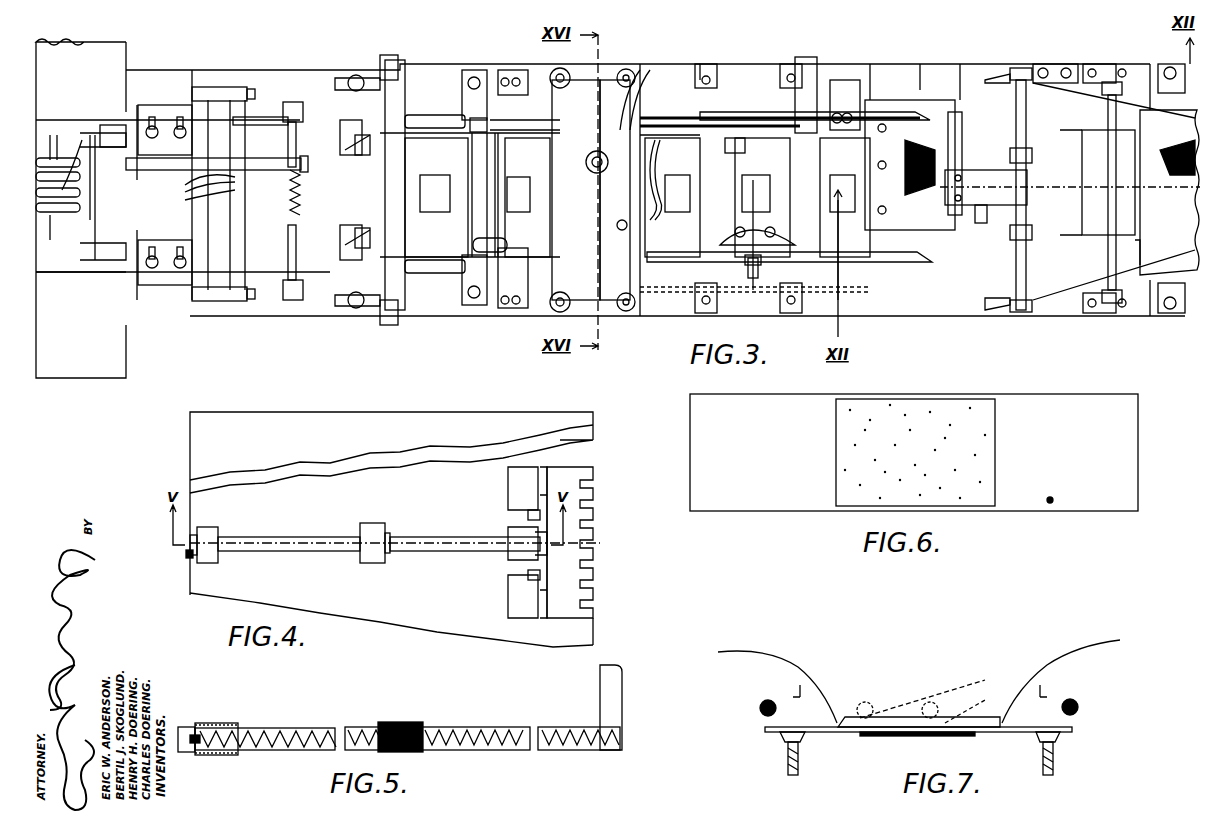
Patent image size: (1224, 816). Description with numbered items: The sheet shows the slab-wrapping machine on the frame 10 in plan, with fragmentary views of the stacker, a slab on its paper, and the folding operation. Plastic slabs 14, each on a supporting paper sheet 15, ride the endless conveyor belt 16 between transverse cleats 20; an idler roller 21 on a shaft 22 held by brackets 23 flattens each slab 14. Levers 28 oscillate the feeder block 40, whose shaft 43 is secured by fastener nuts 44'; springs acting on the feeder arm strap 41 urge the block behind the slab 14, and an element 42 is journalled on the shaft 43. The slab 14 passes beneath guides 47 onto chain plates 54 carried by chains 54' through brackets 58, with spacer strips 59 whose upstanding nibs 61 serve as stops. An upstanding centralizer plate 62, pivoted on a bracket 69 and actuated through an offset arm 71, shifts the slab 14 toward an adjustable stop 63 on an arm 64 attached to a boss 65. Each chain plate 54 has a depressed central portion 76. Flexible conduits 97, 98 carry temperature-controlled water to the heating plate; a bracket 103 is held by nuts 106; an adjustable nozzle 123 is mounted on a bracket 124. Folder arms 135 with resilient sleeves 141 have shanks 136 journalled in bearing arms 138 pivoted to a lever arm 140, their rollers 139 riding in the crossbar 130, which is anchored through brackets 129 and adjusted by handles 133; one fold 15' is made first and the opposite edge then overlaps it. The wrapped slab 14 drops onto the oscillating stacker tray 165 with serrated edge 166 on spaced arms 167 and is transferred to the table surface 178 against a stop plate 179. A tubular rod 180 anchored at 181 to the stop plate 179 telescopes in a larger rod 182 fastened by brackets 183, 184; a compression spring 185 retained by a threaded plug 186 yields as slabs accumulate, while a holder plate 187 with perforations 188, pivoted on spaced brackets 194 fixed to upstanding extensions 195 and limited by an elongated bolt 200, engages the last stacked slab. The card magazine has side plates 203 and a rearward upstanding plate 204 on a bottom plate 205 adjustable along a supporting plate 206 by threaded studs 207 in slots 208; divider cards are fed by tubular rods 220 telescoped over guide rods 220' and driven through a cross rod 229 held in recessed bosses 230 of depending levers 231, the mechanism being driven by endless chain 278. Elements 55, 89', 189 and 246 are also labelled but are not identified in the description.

In FIG. 3, the frame 10 is at (1040, 341).
In FIG. 6, the plastic slab 14 is at (935, 407).
In FIG. 7, the plastic slab 14 is at (897, 715).
In FIG. 6, the paper sheet 15 is at (934, 452).
In FIG. 7, the paper sheet 15 is at (919, 672).
In FIG. 7, the first fold 15' is at (975, 706).
In FIG. 3, the endless conveyor belt 16 is at (1170, 130).
In FIG. 3, the transverse cleats 20 is at (1062, 150).
In FIG. 3, the idler roller 21 is at (1112, 175).
In FIG. 3, the shaft 22 is at (1135, 245).
In FIG. 3, the brackets 23 is at (1122, 328).
In FIG. 3, the levers 28 is at (990, 336).
In FIG. 3, the feeder block 40 is at (960, 120).
In FIG. 3, the feeder arm strap 41 is at (975, 185).
In FIG. 3, the journalled member 42 is at (979, 199).
In FIG. 3, the shaft 43 is at (1022, 125).
In FIG. 3, the fastener nuts 44' is at (1033, 195).
In FIG. 3, the guides 47 is at (900, 282).
In FIG. 3, the chain plates 54 is at (569, 190).
In FIG. 7, the chain plates 54 is at (918, 745).
In FIG. 7, the chains 54' is at (895, 760).
In FIG. 3, the block 55 is at (840, 150).
In FIG. 7, the brackets 58 is at (1085, 748).
In FIG. 3, the spacer strips 59 is at (705, 148).
In FIG. 3, the upstanding nibs 61 is at (695, 235).
In FIG. 3, the upstanding plate 62 is at (730, 140).
In FIG. 3, the stop 63 is at (758, 225).
In FIG. 3, the arm 64 is at (795, 240).
In FIG. 3, the boss 65 is at (750, 265).
In FIG. 3, the bracket 69 is at (780, 130).
In FIG. 3, the offset arm 71 is at (865, 100).
In FIG. 3, the depressed central portion 76 is at (843, 240).
In FIG. 7, the depressed central portion 76 is at (905, 736).
In FIG. 3, the lever 89' is at (664, 193).
In FIG. 3, the flexible conduit 97 is at (637, 110).
In FIG. 3, the flexible conduit 98 is at (630, 220).
In FIG. 3, the bracket 103 is at (623, 300).
In FIG. 3, the nuts 106 is at (630, 325).
In FIG. 3, the adjustable nozzle 123 is at (450, 244).
In FIG. 3, the bracket 124 is at (500, 330).
In FIG. 3, the brackets 129 is at (346, 235).
In FIG. 3, the crossbar 130 is at (346, 191).
In FIG. 3, the handle 133 is at (325, 330).
In FIG. 3, the folder arms 135 is at (410, 303).
In FIG. 7, the folder arms 135 is at (1093, 712).
In FIG. 3, the shanks 136 is at (470, 195).
In FIG. 3, the bearing arms 138 is at (410, 340).
In FIG. 3, the rollers 139 is at (345, 200).
In FIG. 3, the lever arm 140 is at (380, 345).
In FIG. 3, the resilient sleeves 141 is at (450, 295).
In FIG. 7, the resilient sleeves 141 is at (1090, 670).
In FIG. 4, the oscillating stacker tray 165 is at (605, 470).
In FIG. 4, the serrated edge 166 is at (605, 490).
In FIG. 4, the spaced arms 167 is at (530, 578).
In FIG. 3, the supporting table surface 178 is at (88, 360).
In FIG. 4, the supporting table surface 178 is at (252, 428).
In FIG. 4, the stop plate 179 is at (575, 555).
In FIG. 5, the stop plate 179 is at (622, 700).
In FIG. 4, the tubular rod 180 is at (465, 538).
In FIG. 5, the tubular rod 180 is at (488, 725).
In FIG. 4, the anchorage 181 is at (535, 560).
In FIG. 5, the anchorage 181 is at (605, 727).
In FIG. 4, the aligned rod 182 is at (318, 540).
In FIG. 5, the aligned rod 182 is at (348, 722).
In FIG. 4, the bracket 183 is at (378, 520).
In FIG. 5, the bracket 183 is at (398, 720).
In FIG. 4, the bracket 184 is at (206, 540).
In FIG. 5, the bracket 184 is at (227, 724).
In FIG. 5, the compression spring 185 is at (360, 725).
In FIG. 4, the threaded plug 186 is at (190, 560).
In FIG. 5, the threaded plug 186 is at (200, 745).
In FIG. 3, the holder plate 187 is at (50, 160).
In FIG. 3, the perforations 188 is at (55, 152).
In FIG. 3, the fin 189 is at (80, 250).
In FIG. 3, the spaced brackets 194 is at (72, 278).
In FIG. 3, the upstanding extensions 195 is at (110, 295).
In FIG. 3, the elongated bolt 200 is at (100, 128).
In FIG. 3, the plates 203 is at (165, 106).
In FIG. 3, the angularly upstanding plate 204 is at (160, 187).
In FIG. 3, the bottom plate 205 is at (230, 178).
In FIG. 3, the supporting plate 206 is at (175, 287).
In FIG. 3, the threaded studs 207 is at (230, 190).
In FIG. 3, the slots 208 is at (230, 201).
In FIG. 3, the tubular rods 220 is at (240, 190).
In FIG. 3, the guide rods 220' is at (217, 200).
In FIG. 3, the cross rod 229 is at (315, 95).
In FIG. 3, the recessed bosses 230 is at (305, 320).
In FIG. 3, the depending levers 231 is at (305, 290).
In FIG. 3, the bracket 246 is at (1055, 64).
In FIG. 3, the endless chain 278 is at (760, 292).